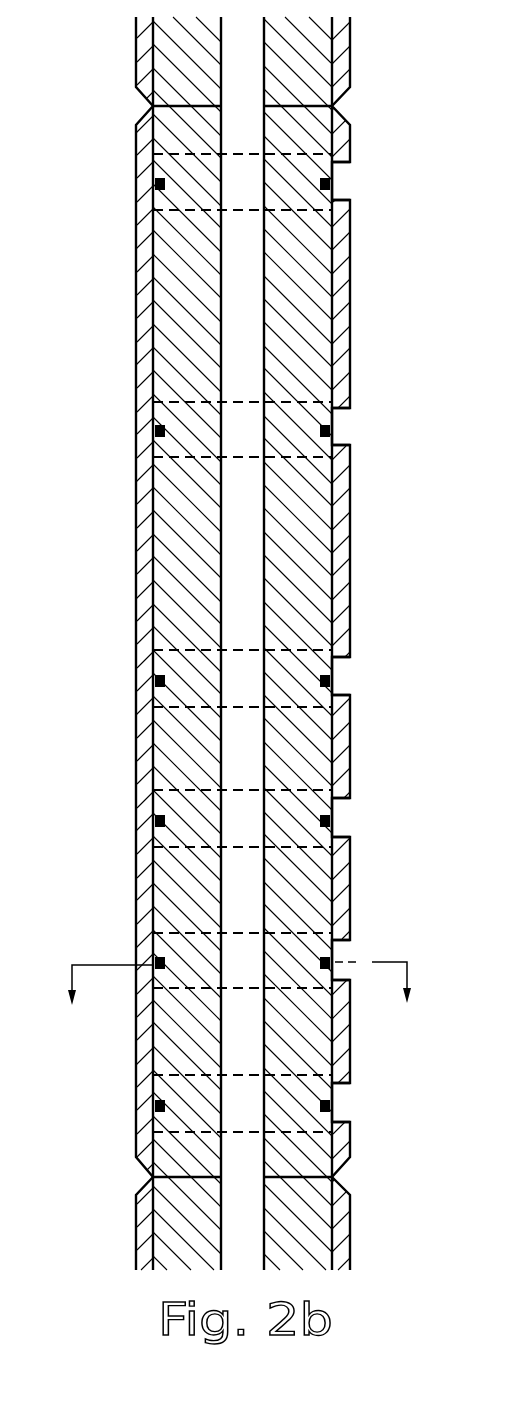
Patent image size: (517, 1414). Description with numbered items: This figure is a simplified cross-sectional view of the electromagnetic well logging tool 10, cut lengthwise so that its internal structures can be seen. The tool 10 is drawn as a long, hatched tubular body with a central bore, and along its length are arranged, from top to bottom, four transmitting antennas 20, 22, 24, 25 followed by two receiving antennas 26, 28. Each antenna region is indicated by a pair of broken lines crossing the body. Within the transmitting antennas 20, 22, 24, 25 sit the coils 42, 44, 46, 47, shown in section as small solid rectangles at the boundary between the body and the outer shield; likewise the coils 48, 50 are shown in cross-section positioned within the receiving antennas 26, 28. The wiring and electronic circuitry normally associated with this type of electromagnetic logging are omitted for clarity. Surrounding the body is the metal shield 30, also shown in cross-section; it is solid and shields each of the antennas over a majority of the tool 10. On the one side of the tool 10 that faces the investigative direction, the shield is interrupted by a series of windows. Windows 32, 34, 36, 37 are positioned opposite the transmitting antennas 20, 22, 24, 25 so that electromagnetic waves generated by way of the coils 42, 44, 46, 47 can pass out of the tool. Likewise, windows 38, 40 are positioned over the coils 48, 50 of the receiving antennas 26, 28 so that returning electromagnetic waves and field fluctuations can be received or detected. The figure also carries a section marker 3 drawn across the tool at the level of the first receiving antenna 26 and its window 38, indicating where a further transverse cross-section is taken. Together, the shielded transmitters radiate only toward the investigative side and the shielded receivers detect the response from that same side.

The tool 10 is at (231, 643).
The transmitting antenna 20 is at (153, 170).
The transmitting antenna 22 is at (153, 417).
The transmitting antenna 24 is at (153, 665).
The transmitting antenna 25 is at (153, 805).
The receiving antenna 26 is at (153, 950).
The receiving antenna 28 is at (153, 1092).
The metal shield 30 is at (136, 557).
The window 32 is at (353, 162).
The window 34 is at (353, 408).
The window 36 is at (353, 657).
The window 37 is at (353, 798).
The window 38 is at (353, 980).
The window 40 is at (353, 1083).
The coil 42 is at (155, 185).
The coil 44 is at (155, 433).
The coil 46 is at (155, 681).
The coil 47 is at (155, 822).
The coil 48 is at (155, 965).
The coil 50 is at (155, 1106).
The section line 3-3' 3 is at (239, 985).